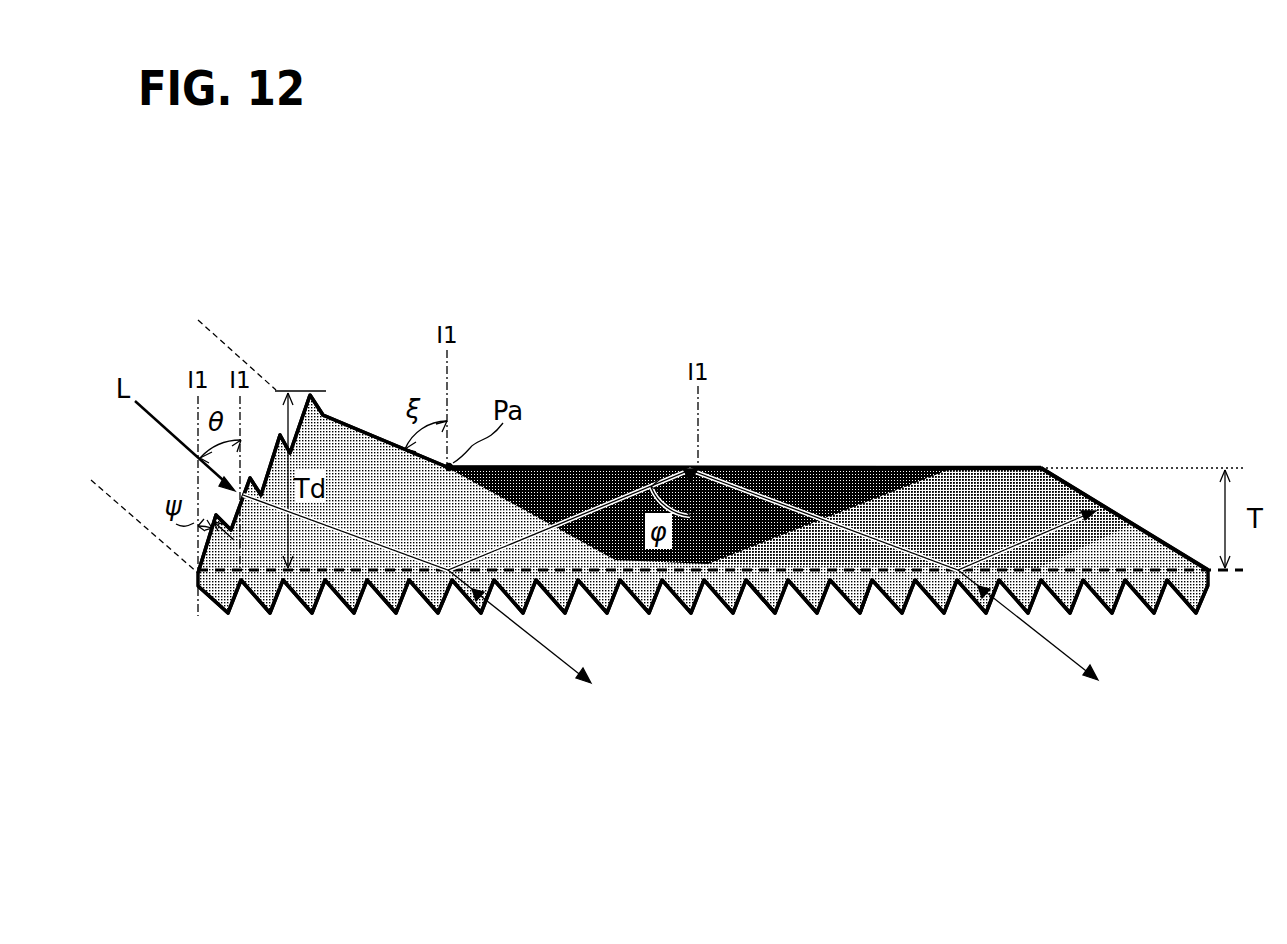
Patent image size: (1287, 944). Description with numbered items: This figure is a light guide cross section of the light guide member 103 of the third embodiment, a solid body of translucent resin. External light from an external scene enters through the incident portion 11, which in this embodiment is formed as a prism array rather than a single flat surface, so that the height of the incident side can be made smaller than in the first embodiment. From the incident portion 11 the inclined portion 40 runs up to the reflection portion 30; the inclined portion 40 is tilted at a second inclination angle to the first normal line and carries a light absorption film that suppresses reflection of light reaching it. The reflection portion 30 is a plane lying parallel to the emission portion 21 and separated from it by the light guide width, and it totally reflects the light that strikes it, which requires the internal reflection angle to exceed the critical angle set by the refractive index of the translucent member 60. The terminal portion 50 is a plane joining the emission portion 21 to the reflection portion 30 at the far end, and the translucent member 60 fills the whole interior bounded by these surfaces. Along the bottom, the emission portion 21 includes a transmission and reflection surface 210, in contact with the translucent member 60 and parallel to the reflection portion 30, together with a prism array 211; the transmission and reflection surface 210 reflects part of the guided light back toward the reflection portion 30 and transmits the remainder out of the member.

The light guide member 103 is at (1067, 307).
The incident portion 11 is at (263, 450).
The inclined portion 40 is at (335, 410).
The reflection portion 30 is at (752, 457).
The translucent member 60 is at (973, 500).
The terminal portion 50 is at (1073, 482).
The emission portion 21 is at (703, 666).
The transmission and reflection surface 210 is at (747, 583).
The prism array 211 is at (873, 638).